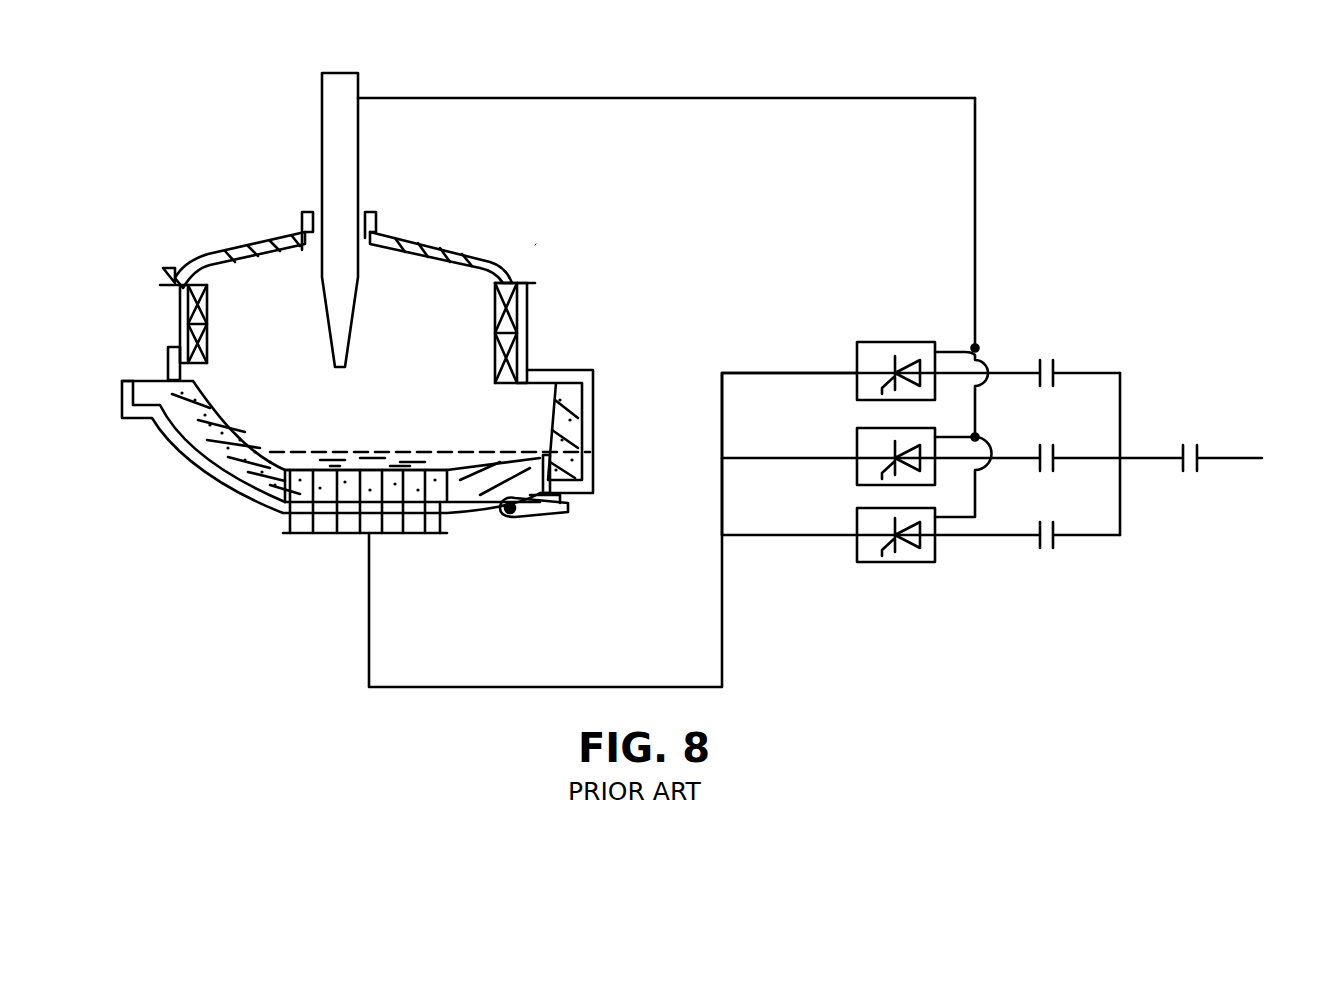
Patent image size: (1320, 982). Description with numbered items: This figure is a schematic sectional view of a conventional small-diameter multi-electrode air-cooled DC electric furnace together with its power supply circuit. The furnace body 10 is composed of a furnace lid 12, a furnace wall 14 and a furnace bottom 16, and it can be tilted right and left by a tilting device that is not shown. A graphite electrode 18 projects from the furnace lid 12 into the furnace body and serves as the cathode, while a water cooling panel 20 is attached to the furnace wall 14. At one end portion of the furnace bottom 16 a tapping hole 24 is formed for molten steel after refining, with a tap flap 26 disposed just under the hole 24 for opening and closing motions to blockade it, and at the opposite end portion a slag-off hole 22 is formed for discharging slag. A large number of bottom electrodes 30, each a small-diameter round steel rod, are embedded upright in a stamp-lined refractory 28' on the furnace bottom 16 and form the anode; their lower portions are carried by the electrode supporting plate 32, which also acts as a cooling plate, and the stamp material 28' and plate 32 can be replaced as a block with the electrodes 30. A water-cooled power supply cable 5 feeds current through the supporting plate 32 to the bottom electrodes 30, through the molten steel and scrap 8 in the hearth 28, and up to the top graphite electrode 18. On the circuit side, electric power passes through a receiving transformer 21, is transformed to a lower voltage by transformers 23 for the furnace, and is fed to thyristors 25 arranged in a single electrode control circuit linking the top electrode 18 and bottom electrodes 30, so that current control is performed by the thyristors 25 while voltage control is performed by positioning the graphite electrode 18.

The power supply cable 5 is at (497, 688).
The scrap charge 8 is at (352, 452).
The furnace body 10 is at (545, 235).
The furnace lid 12 is at (440, 238).
The furnace wall 14 is at (530, 305).
The furnace bottom 16 is at (210, 483).
The graphite electrode 18 is at (320, 158).
The water cooling panel 20 is at (205, 320).
The receiving transformer 21 is at (1188, 442).
The slag-off hole 22 is at (150, 380).
The transformers for the furnace 23 is at (1046, 358).
The tapping hole 24 is at (565, 445).
The thyristors 25 is at (895, 340).
The tap flap 26 is at (538, 528).
The hearth refractory 28 is at (412, 531).
The refractory 28' is at (282, 436).
The bottom electrodes 30 is at (440, 460).
The electrode supporting plate 32 is at (322, 535).